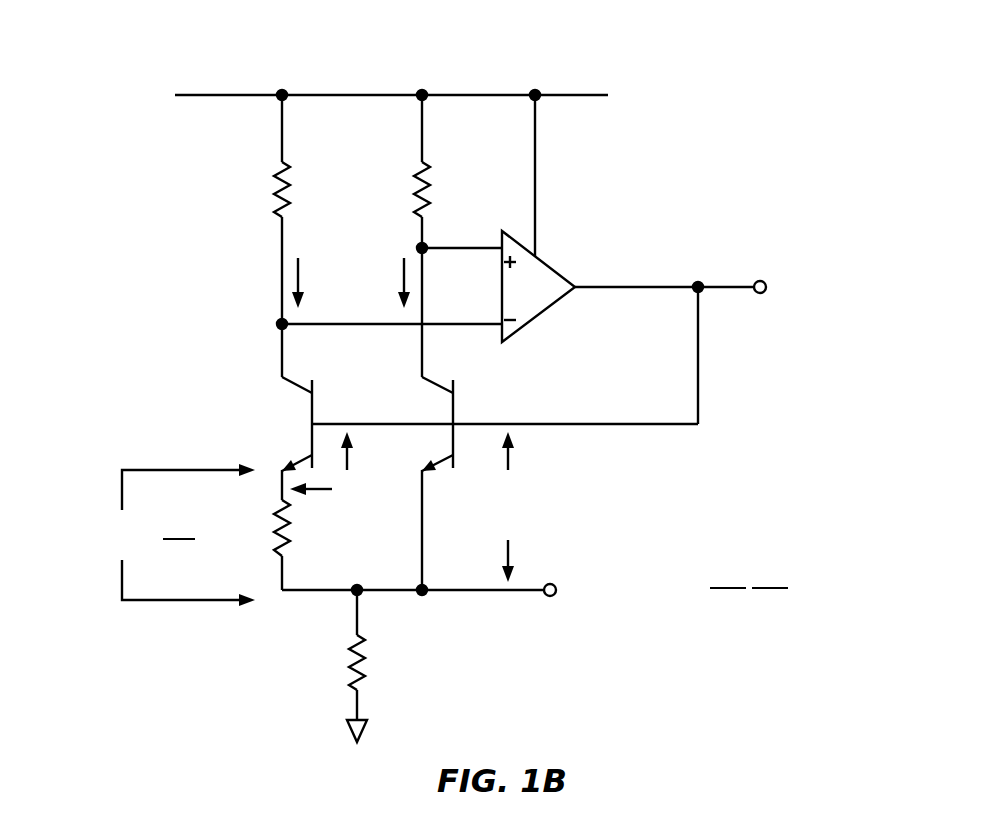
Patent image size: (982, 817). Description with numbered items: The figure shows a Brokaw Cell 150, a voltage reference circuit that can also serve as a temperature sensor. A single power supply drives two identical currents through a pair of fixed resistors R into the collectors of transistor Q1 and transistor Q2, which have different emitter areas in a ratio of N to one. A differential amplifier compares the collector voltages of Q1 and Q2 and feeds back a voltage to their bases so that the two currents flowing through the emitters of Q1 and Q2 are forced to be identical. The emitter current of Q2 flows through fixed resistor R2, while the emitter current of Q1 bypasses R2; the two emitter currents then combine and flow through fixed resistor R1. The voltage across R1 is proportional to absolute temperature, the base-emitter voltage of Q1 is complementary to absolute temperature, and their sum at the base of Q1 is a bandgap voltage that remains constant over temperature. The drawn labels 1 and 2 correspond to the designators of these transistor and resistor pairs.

The Brokaw Cell 150 is at (482, 372).
The transistor Q1 and resistor R1 1 is at (424, 418).
The transistor Q2 and resistor R2 2 is at (296, 483).
The transistor Q1 is at (434, 424).
The transistor Q2 is at (282, 424).
The fixed resistor R1 is at (382, 655).
The fixed resistor R2 is at (307, 530).
The fixed resistor R is at (294, 209).